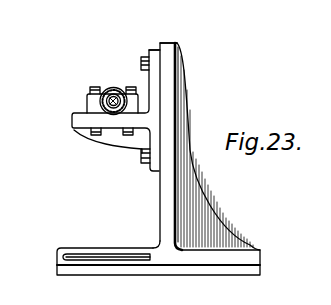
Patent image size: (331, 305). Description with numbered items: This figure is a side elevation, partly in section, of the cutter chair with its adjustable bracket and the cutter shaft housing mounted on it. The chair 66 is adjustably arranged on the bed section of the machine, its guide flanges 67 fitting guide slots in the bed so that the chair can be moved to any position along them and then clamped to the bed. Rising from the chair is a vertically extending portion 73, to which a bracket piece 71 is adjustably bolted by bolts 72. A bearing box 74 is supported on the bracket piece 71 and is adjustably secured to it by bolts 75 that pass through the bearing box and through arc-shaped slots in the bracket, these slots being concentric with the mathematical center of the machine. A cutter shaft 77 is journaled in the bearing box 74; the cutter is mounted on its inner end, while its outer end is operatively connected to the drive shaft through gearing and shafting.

The chair 66 is at (159, 208).
The guide flanges 67 is at (261, 268).
The bracket piece 71 is at (157, 80).
The bolts 72 is at (143, 57).
The vertically extending portion 73 is at (168, 100).
The bearing box 74 is at (88, 97).
The bolts 75 is at (95, 87).
The cutter shaft 77 is at (114, 88).